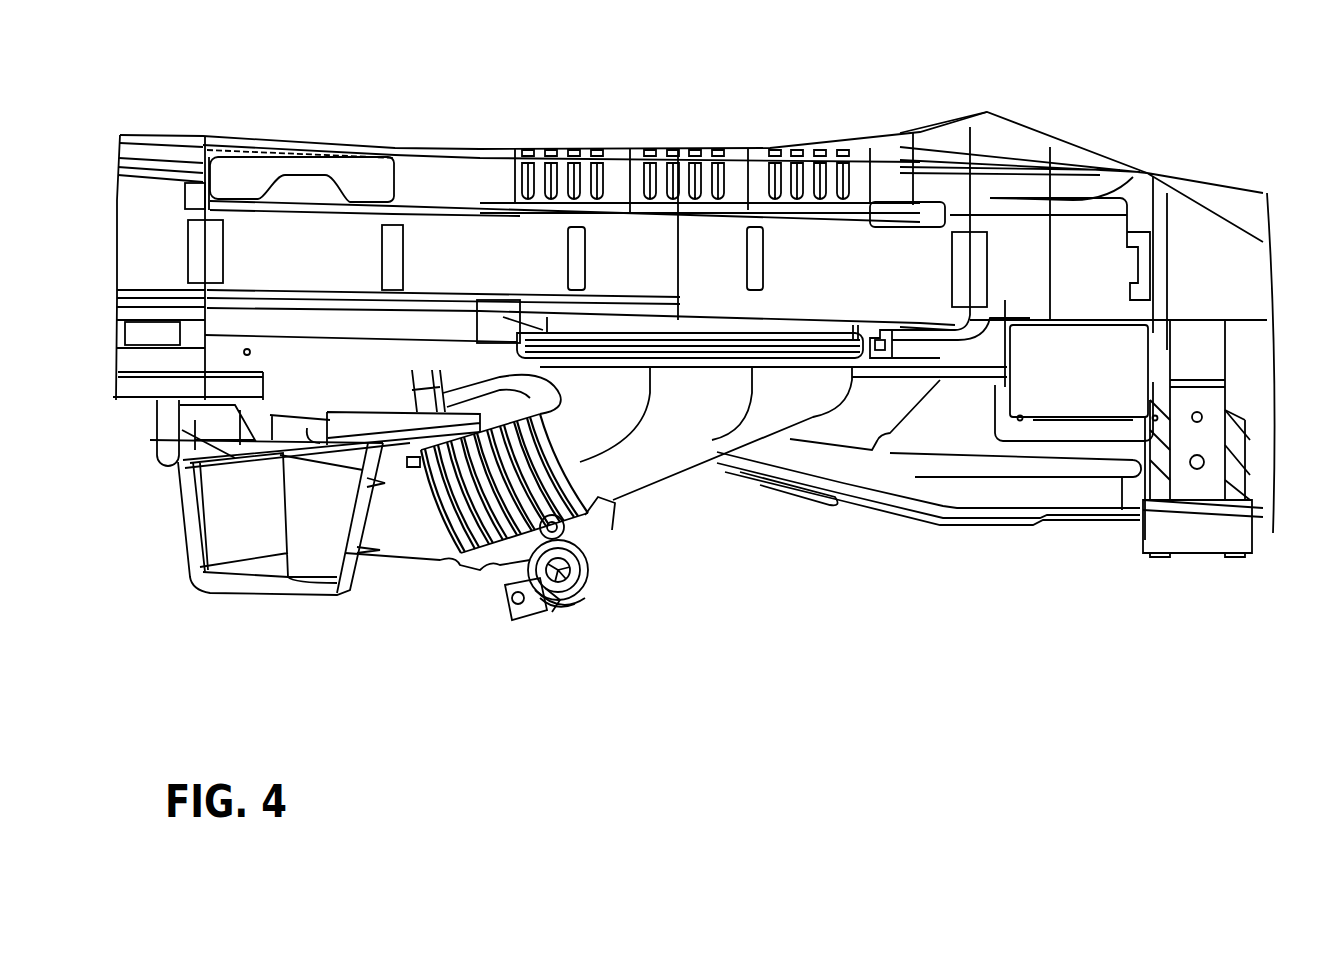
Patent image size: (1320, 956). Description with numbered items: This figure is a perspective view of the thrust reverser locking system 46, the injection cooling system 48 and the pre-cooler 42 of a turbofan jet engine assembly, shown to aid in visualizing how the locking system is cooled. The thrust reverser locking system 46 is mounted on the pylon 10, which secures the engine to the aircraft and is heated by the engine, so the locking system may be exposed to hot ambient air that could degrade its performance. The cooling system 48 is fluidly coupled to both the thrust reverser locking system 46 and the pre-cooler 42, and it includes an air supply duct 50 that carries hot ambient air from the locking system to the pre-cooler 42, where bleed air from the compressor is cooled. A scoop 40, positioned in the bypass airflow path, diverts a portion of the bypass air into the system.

The pylon 10 is at (175, 137).
The scoop 40 is at (197, 577).
The pre-cooler 42 is at (857, 372).
The thrust reverser locking system 46 is at (1147, 327).
The injection cooling system 48 is at (947, 380).
The air supply duct 50 is at (980, 353).